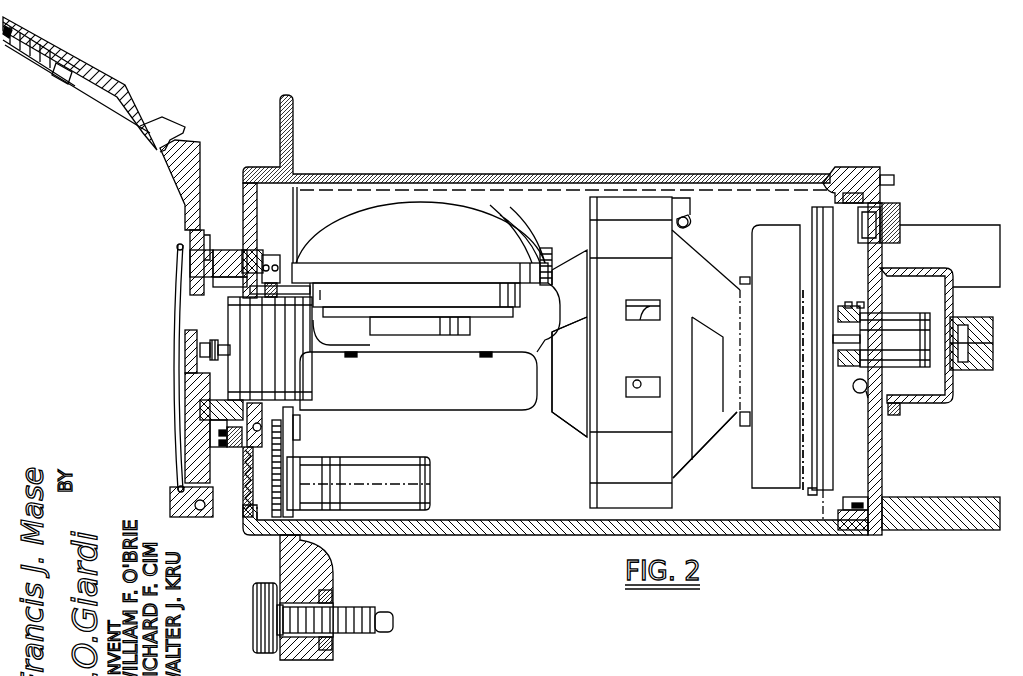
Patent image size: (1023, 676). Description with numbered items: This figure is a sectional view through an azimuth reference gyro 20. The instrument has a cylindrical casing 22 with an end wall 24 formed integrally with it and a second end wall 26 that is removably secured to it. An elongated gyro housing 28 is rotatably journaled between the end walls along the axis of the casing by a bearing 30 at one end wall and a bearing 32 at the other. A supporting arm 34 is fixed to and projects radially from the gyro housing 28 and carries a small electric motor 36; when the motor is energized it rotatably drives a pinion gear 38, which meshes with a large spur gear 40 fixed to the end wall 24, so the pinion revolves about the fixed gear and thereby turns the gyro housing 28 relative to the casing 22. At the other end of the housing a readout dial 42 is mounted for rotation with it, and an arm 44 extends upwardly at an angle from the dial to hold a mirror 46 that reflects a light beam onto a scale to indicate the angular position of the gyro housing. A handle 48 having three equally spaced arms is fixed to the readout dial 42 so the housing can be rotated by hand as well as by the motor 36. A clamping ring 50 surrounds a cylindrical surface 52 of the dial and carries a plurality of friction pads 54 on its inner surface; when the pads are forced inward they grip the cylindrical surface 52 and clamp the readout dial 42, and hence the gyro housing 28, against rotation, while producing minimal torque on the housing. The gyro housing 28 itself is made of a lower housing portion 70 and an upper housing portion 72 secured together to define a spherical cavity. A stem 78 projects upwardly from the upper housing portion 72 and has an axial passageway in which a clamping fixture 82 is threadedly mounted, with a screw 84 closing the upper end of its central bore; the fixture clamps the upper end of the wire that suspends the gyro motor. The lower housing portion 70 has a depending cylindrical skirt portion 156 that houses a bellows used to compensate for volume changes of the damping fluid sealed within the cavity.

The azimuth reference gyro 20 is at (621, 377).
The cylindrical casing 22 is at (518, 534).
The end wall 24 is at (242, 217).
The end wall 26 is at (878, 272).
The gyro housing 28 is at (538, 417).
The bearing 30 is at (270, 255).
The bearing 32 is at (847, 302).
The supporting arm 34 is at (293, 428).
The electric motor 36 is at (400, 494).
The pinion gear 38 is at (278, 512).
The spur gear 40 is at (282, 437).
The readout dial 42 is at (187, 440).
The arm 44 is at (83, 63).
The mirror 46 is at (25, 68).
The handle 48 is at (182, 417).
The clamping ring 50 is at (237, 450).
The cylindrical surface 52 is at (217, 430).
The friction pads 54 is at (230, 420).
The lower housing portion 70 is at (717, 447).
The upper housing portion 72 is at (571, 437).
The stem 78 is at (483, 407).
The clamping fixture 82 is at (220, 363).
The screw 84 is at (202, 345).
The cylindrical skirt portion 156 is at (773, 230).